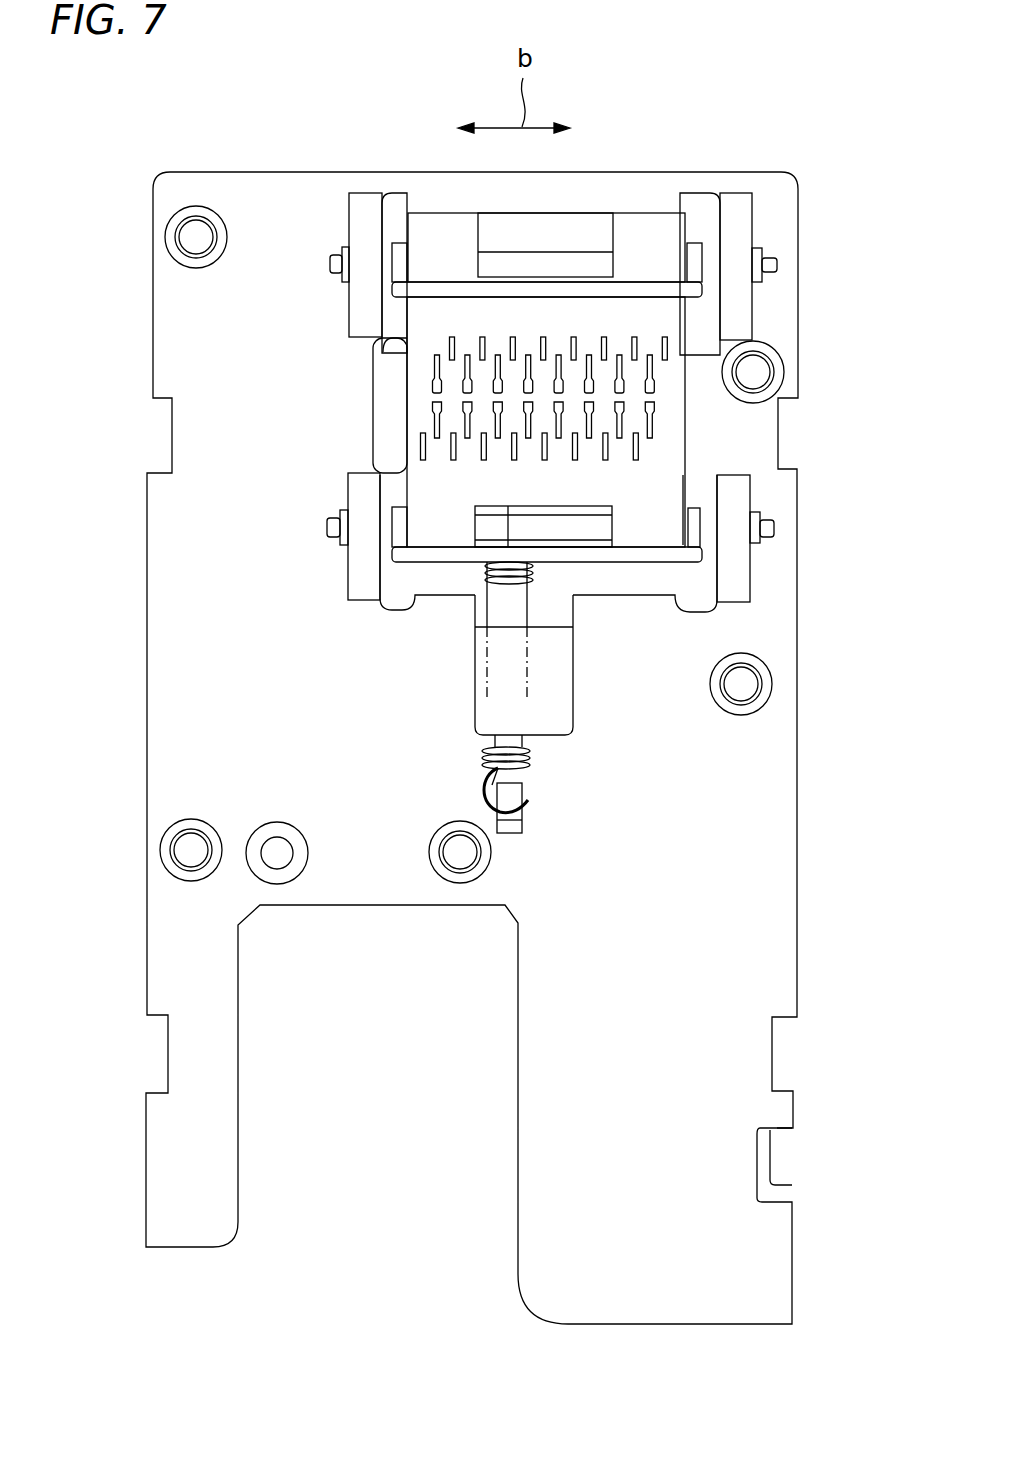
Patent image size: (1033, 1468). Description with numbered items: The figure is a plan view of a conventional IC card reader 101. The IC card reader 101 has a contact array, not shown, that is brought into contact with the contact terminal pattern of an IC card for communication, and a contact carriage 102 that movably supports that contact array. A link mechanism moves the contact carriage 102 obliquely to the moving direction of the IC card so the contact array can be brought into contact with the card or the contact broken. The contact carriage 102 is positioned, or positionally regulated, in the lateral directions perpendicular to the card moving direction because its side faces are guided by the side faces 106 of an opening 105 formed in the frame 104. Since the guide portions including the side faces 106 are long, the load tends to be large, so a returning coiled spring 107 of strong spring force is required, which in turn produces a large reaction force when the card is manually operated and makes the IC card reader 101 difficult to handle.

The IC card reader 101 is at (127, 187).
The contact carriage 102 is at (470, 478).
The frame 104 is at (205, 612).
The opening 105 is at (401, 586).
The side faces 106 is at (410, 396).
The returning coiled spring 107 is at (487, 673).